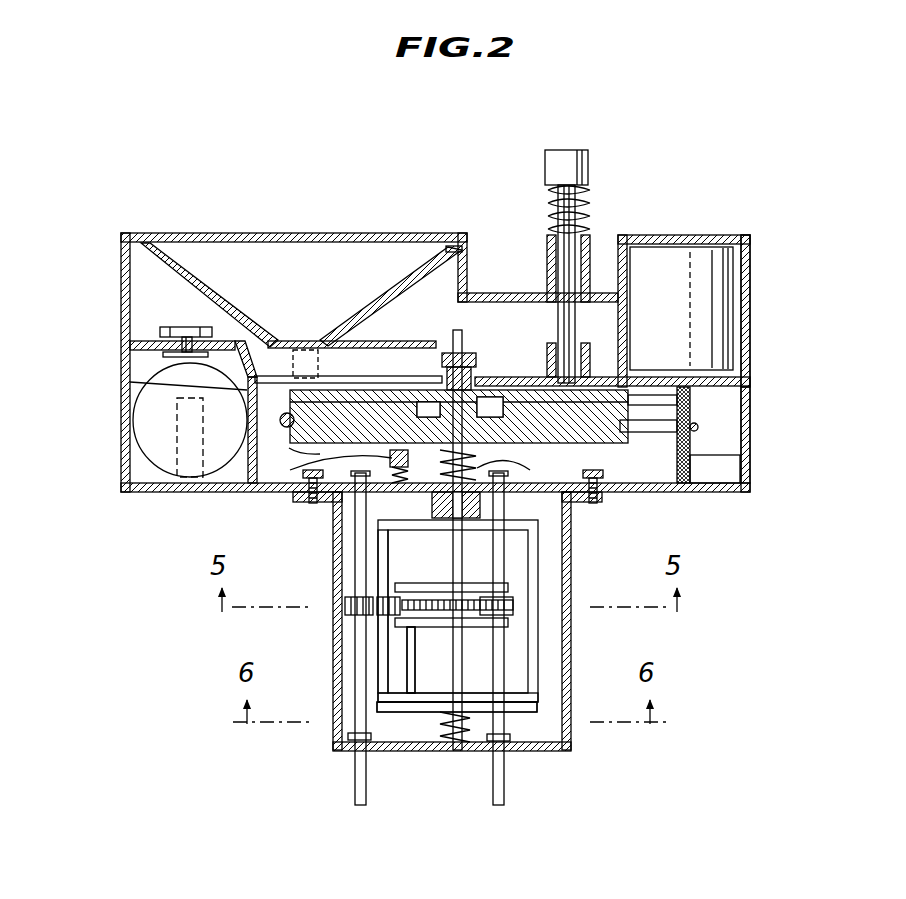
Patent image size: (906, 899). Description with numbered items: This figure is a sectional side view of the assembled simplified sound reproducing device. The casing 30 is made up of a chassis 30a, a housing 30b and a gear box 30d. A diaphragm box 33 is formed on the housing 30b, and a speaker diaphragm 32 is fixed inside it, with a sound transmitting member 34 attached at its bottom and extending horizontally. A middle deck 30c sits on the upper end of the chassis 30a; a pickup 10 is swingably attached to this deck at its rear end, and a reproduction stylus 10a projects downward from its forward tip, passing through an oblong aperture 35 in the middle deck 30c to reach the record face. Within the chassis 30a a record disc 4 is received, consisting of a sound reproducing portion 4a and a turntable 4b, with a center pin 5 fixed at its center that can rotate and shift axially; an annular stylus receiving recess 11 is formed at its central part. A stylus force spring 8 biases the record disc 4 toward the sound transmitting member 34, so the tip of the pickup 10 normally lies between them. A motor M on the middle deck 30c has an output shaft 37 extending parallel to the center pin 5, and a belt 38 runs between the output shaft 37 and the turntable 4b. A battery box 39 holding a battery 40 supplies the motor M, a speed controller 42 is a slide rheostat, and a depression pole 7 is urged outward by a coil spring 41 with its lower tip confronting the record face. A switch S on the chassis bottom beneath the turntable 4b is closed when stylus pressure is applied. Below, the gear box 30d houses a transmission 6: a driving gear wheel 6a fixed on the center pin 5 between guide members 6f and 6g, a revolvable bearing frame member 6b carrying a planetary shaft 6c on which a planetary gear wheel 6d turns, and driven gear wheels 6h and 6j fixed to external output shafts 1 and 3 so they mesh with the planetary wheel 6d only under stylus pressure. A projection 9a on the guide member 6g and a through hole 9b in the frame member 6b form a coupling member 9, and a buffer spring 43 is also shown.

The diaphragm box 33 is at (122, 262).
The speaker diaphragm 32 is at (205, 292).
The pickup 10 is at (300, 368).
The oblong aperture 35 is at (343, 380).
The sound transmitting member 34 is at (390, 338).
The depression pole 7 is at (590, 166).
The coil spring 41 is at (588, 205).
The middle deck 30c is at (607, 375).
The motor M is at (710, 265).
The center pin 5 is at (463, 332).
The housing 30b is at (750, 318).
The speed controller 42 is at (165, 328).
The battery box 39 is at (132, 346).
The stylus receiving recess 11 is at (423, 400).
The reproduction stylus 10a is at (130, 382).
The battery 40 is at (150, 430).
The casing 30 is at (752, 379).
The sound reproducing portion 4a is at (633, 400).
The chassis 30a is at (749, 440).
The belt 38 is at (694, 428).
The output shaft 37 is at (692, 460).
The turntable 4b is at (617, 438).
The record disc 4 is at (290, 432).
The switch S is at (291, 446).
The stylus force spring 8 is at (578, 505).
The planetary shaft 6c is at (380, 552).
The guide member 6f is at (480, 590).
The driven gear wheel 6h is at (348, 600).
The driven gear wheel 6j is at (512, 606).
The planetary gear wheel 6d is at (380, 608).
The driving gear wheel 6a is at (470, 627).
The transmission 6 is at (540, 668).
The guide member 6g is at (400, 624).
The revolvable bearing frame member 6b is at (540, 700).
The coupling member 9 is at (404, 716).
The buffer spring 43 is at (472, 726).
The gear box 30d is at (572, 745).
The external output shaft 1 is at (359, 806).
The through hole 9b is at (423, 713).
The external output shaft 3 is at (503, 806).
The projection 9a is at (417, 660).